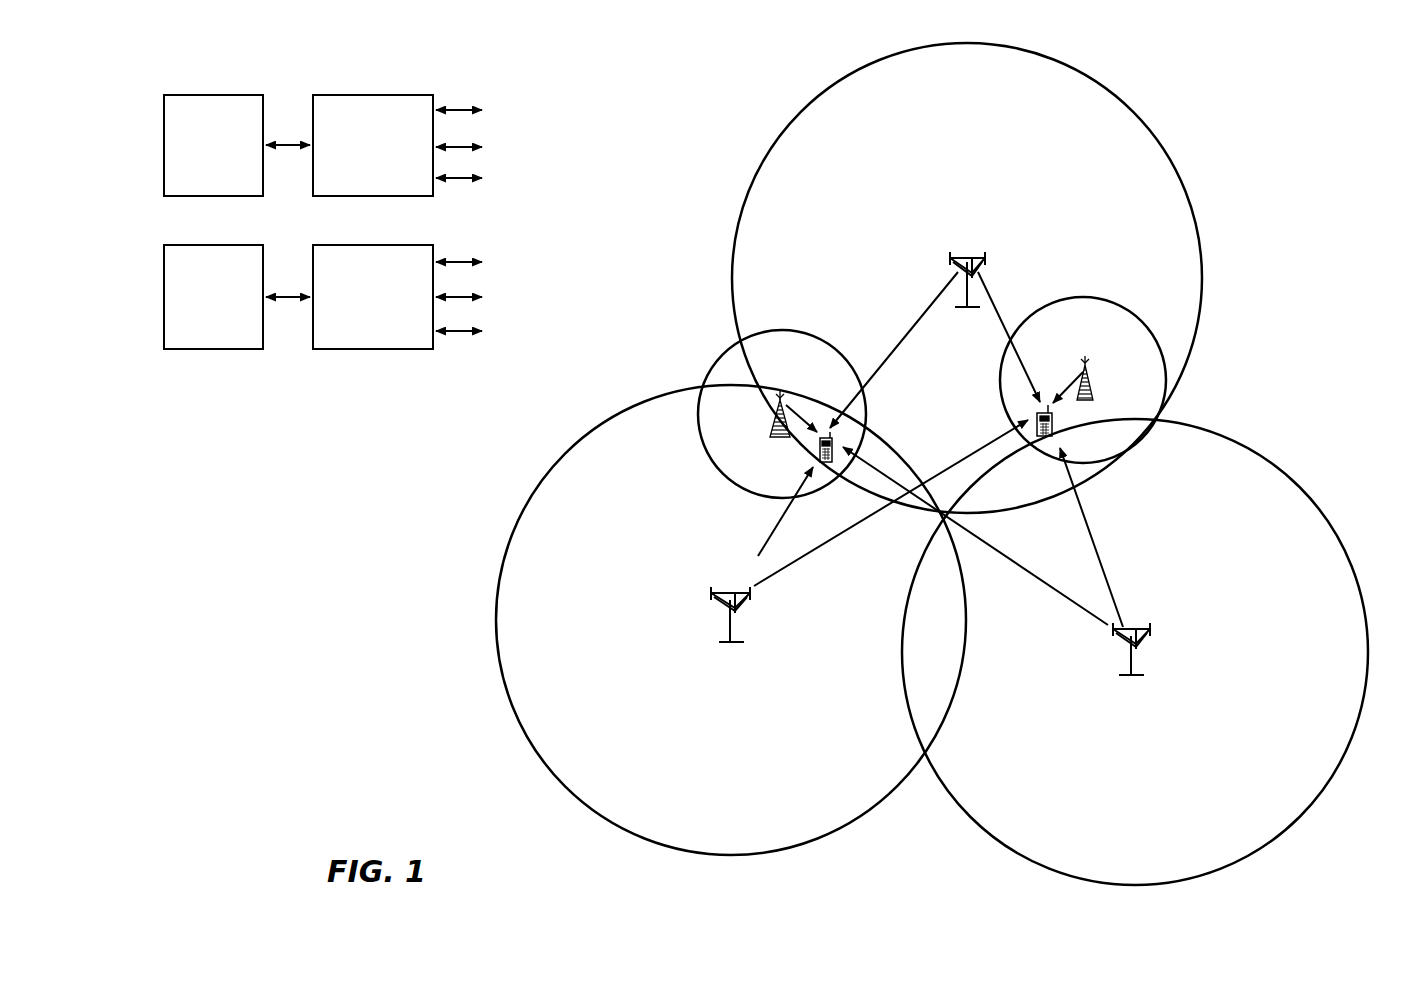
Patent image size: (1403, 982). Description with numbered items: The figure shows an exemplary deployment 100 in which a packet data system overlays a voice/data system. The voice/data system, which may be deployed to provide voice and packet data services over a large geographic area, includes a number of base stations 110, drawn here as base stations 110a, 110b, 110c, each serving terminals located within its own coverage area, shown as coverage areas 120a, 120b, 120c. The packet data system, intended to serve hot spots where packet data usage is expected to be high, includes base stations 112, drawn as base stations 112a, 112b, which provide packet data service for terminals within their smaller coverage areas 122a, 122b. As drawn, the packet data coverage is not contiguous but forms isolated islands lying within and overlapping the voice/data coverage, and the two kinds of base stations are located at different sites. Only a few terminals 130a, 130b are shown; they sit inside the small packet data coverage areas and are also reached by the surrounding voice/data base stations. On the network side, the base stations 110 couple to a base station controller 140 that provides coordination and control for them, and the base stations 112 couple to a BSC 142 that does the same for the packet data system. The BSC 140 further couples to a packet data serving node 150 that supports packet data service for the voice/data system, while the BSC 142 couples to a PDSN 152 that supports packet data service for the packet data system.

The deployment 100 is at (1345, 90).
The base stations 110 is at (504, 138).
The base stations 112 is at (504, 290).
The base station controller 140 is at (370, 95).
The BSC 142 is at (370, 245).
The packet data serving node 150 is at (212, 95).
The PDSN 152 is at (212, 245).
The base station 110a is at (966, 256).
The base station 110b is at (730, 592).
The base station 110c is at (1136, 628).
The base station 112a is at (1093, 378).
The base station 112b is at (776, 410).
The coverage area 120a is at (800, 112).
The coverage area 120b is at (571, 447).
The coverage area 120c is at (1294, 482).
The coverage area 122a is at (1083, 297).
The coverage area 122b is at (716, 364).
The terminal 130a is at (1052, 430).
The terminal 130b is at (819, 455).